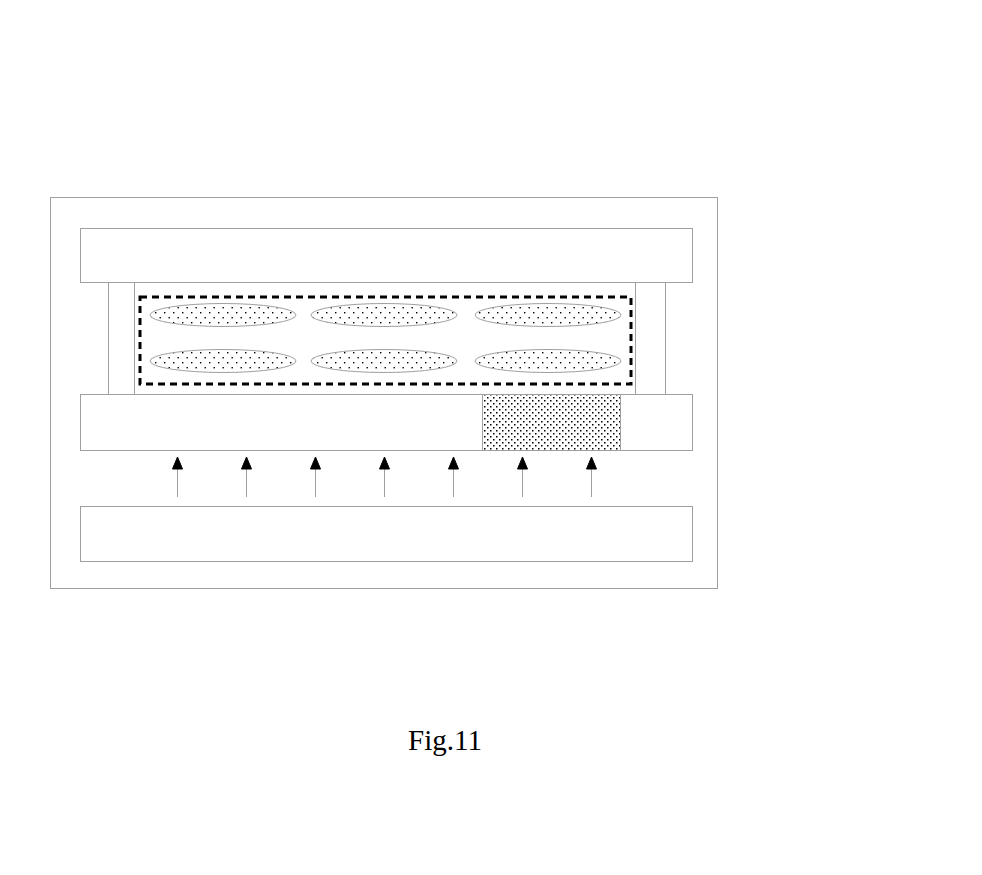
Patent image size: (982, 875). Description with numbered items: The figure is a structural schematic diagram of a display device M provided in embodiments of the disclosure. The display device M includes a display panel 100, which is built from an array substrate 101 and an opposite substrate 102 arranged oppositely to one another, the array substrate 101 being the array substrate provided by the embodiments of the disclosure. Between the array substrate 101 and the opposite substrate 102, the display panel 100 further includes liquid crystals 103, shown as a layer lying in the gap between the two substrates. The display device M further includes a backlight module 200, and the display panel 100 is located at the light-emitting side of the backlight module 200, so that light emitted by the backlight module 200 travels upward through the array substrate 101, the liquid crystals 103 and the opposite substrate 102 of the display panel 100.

The display device M is at (274, 197).
The display panel 100 is at (452, 232).
The array substrate 101 is at (657, 418).
The opposite substrate 102 is at (477, 228).
The liquid crystal 103 is at (587, 297).
The backlight module 200 is at (373, 532).